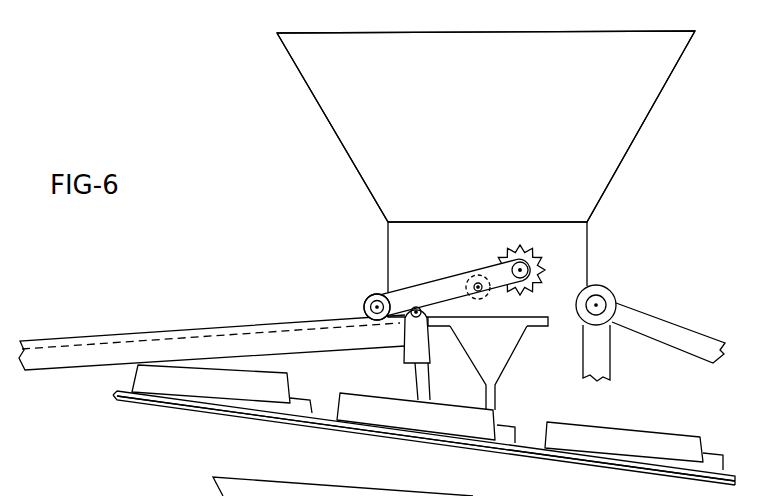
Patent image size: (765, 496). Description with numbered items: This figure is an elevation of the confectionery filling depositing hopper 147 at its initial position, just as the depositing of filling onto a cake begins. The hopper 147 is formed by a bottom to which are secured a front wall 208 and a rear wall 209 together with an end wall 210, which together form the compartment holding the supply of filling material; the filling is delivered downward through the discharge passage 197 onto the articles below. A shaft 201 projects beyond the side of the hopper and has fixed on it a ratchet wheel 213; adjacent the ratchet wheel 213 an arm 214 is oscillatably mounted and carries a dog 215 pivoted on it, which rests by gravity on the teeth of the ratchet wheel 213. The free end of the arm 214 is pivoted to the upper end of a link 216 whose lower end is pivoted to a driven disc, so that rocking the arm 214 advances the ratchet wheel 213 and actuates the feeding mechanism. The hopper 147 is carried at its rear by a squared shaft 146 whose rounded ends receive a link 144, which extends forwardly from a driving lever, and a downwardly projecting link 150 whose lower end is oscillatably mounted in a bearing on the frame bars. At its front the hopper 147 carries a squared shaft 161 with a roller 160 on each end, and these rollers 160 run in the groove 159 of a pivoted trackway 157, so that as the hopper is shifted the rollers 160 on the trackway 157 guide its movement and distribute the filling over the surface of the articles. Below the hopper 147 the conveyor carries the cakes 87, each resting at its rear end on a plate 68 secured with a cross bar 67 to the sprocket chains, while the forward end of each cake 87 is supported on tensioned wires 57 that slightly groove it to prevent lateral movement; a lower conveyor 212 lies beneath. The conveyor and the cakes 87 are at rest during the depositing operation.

The hopper 147 is at (624, 164).
The end wall 210 is at (456, 33).
The front wall 208 is at (300, 73).
The rear wall 209 is at (664, 90).
The discharge chute 197 is at (508, 364).
The downwardly projecting link 150 is at (613, 375).
The link 144 is at (652, 321).
The squared shaft 146 is at (604, 300).
The trackway 157 is at (50, 338).
The groove 159 is at (255, 328).
The ratchet wheel 213 is at (538, 248).
The arm 214 is at (443, 286).
The shaft 201 is at (530, 268).
The dog 215 is at (487, 262).
The roller 160 is at (364, 302).
The squared shaft 161 is at (372, 296).
The link 216 is at (407, 356).
The cake 87 is at (292, 386).
The cross bar 67 is at (312, 411).
The wire 57 is at (521, 452).
The plate 68 is at (297, 418).
The lower conveyor 212 is at (343, 486).